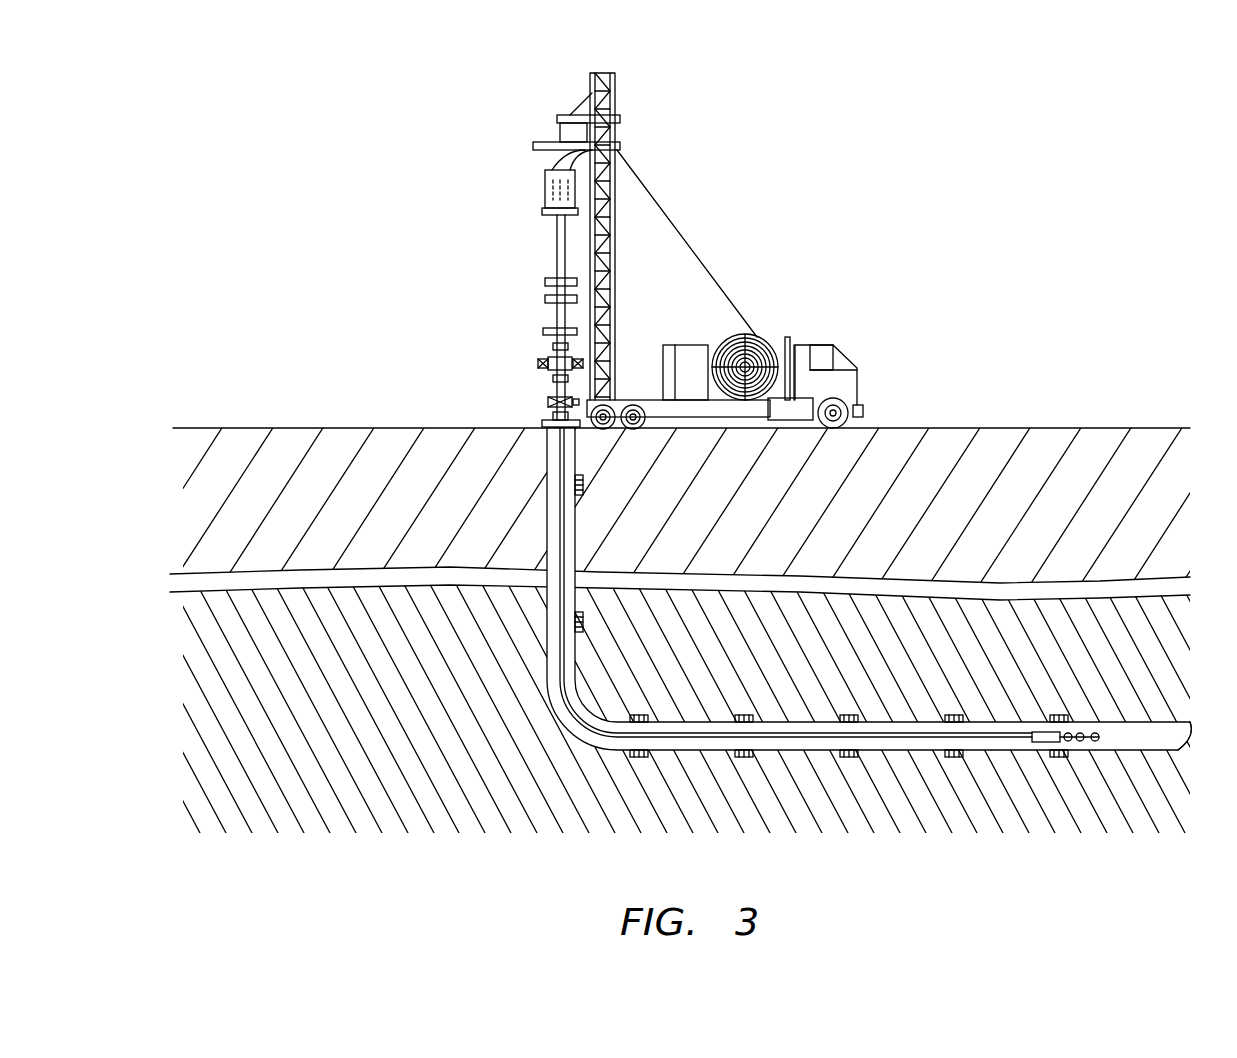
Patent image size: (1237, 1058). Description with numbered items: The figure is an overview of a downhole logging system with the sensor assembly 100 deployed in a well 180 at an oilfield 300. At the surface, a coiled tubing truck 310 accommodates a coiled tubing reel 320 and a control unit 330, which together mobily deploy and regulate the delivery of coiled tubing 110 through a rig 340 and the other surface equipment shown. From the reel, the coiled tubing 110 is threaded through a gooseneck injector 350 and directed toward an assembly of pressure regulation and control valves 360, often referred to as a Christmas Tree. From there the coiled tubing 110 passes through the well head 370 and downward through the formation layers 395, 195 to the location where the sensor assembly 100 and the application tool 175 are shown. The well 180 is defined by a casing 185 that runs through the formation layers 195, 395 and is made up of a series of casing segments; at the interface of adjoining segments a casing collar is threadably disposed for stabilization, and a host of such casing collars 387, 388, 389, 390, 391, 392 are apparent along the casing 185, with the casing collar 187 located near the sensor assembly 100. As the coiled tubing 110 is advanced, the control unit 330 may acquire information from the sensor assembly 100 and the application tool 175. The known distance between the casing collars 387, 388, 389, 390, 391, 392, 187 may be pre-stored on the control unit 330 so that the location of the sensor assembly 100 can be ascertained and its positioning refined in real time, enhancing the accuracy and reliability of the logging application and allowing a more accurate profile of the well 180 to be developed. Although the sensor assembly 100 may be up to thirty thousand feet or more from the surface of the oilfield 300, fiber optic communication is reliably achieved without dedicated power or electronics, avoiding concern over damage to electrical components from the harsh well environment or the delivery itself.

The oilfield 300 is at (290, 150).
The rig 340 is at (660, 58).
The gooseneck injector 350 is at (545, 165).
The coiled tubing 110 is at (660, 203).
The control unit 330 is at (685, 343).
The coiled tubing reel 320 is at (757, 337).
The coiled tubing truck 310 is at (857, 378).
The pressure regulation and control valves 360 is at (527, 358).
The well head 370 is at (545, 427).
The formation layer 395 is at (860, 504).
The formation layer 195 is at (860, 639).
The casing 185 is at (578, 558).
The casing collar 387 is at (583, 487).
The casing collar 388 is at (583, 622).
The casing collar 389 is at (658, 700).
The casing collar 390 is at (767, 700).
The casing collar 391 is at (847, 758).
The casing collar 392 is at (952, 715).
The casing collar 187 is at (1055, 715).
The application tool 175 is at (1083, 733).
The well 180 is at (1155, 752).
The sensor assembly 100 is at (1040, 745).